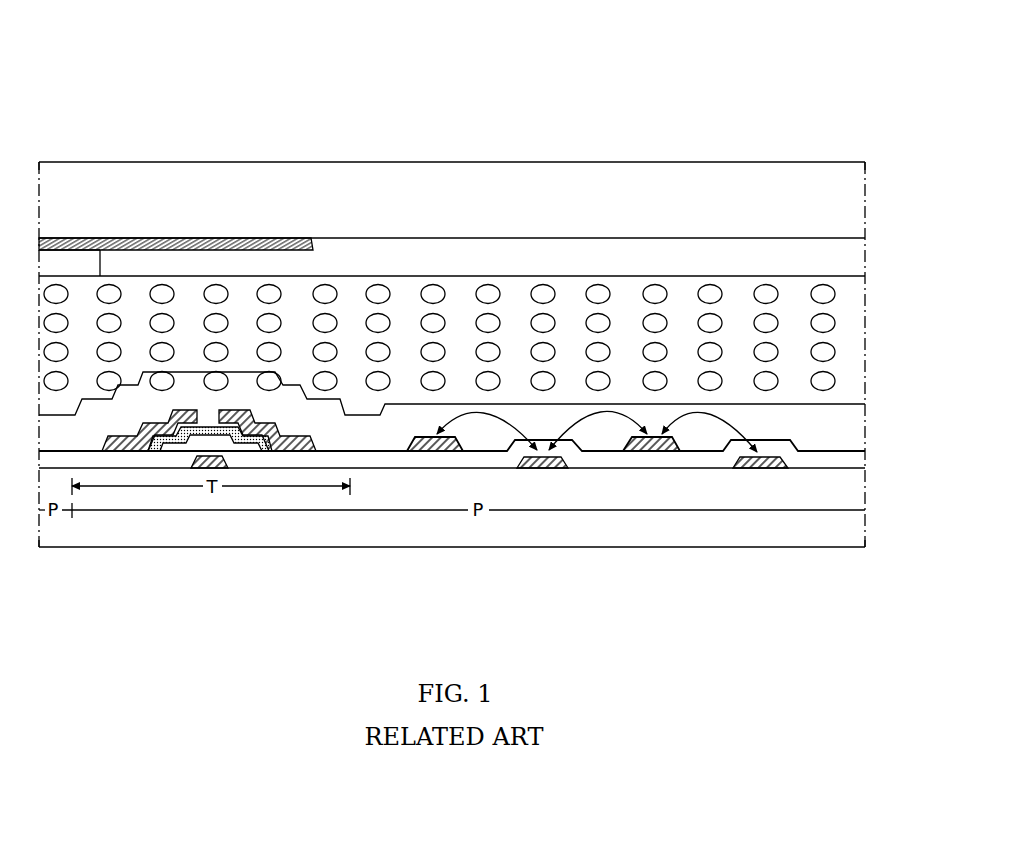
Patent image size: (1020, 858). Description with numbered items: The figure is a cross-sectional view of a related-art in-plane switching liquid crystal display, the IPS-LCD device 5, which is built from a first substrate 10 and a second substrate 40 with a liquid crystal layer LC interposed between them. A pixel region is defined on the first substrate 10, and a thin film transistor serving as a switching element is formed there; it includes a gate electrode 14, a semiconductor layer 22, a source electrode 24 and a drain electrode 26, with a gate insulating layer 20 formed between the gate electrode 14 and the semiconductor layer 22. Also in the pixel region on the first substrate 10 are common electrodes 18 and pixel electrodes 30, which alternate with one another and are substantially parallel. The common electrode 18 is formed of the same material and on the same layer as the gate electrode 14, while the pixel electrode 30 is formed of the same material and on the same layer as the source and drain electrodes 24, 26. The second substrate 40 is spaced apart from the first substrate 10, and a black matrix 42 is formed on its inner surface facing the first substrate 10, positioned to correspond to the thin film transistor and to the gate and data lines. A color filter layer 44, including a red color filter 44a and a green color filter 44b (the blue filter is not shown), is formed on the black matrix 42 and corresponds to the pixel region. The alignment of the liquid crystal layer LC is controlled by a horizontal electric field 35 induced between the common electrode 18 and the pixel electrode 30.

The IPS-LCD device 5 is at (801, 120).
The first substrate 10 is at (846, 532).
The gate electrode 14 is at (203, 469).
The common electrode 18 is at (541, 469).
The gate insulating layer 20 is at (393, 463).
The semiconductor layer 22 is at (262, 452).
The source electrode 24 is at (187, 410).
The drain electrode 26 is at (238, 410).
The pixel electrode 30 is at (447, 452).
The horizontal electric field 35 is at (620, 406).
The second substrate 40 is at (485, 212).
The black matrix 42 is at (236, 242).
The color filter layer 44 is at (745, 108).
The red color filter 44a is at (82, 262).
The green color filter 44b is at (740, 250).
The liquid crystal layer LC is at (850, 312).